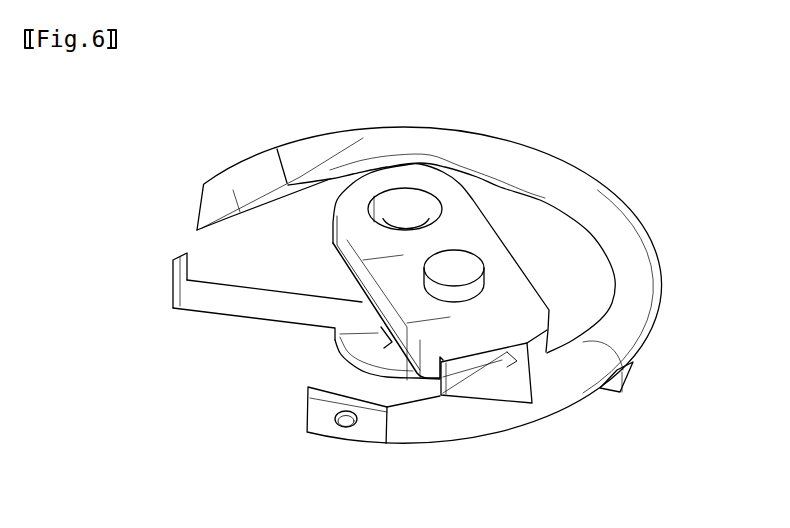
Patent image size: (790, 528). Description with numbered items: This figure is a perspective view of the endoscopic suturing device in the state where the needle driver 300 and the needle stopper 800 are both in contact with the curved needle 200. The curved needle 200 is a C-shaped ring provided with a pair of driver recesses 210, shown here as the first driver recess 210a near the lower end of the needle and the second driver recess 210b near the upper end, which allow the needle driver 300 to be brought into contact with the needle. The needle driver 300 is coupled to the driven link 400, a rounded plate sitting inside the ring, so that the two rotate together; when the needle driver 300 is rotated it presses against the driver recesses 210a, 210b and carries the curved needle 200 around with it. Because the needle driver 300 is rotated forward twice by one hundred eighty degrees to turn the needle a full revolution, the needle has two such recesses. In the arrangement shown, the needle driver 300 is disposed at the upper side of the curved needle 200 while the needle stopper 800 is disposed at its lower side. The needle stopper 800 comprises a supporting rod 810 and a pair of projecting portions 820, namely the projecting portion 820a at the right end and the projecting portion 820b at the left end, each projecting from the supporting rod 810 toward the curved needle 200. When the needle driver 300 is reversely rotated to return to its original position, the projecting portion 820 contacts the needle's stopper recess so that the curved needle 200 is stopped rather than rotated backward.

The curved needle 200 is at (473, 133).
The driver recesses 210 is at (401, 296).
The driver recess 210a is at (510, 408).
The driver recess 210b is at (317, 152).
The needle driver 300 is at (463, 388).
The driven link 400 is at (393, 178).
The needle stopper 800 is at (229, 315).
The supporting rod 810 is at (278, 295).
The projecting portion 820 is at (672, 391).
The projecting portion 820a is at (637, 362).
The projecting portion 820b is at (178, 279).